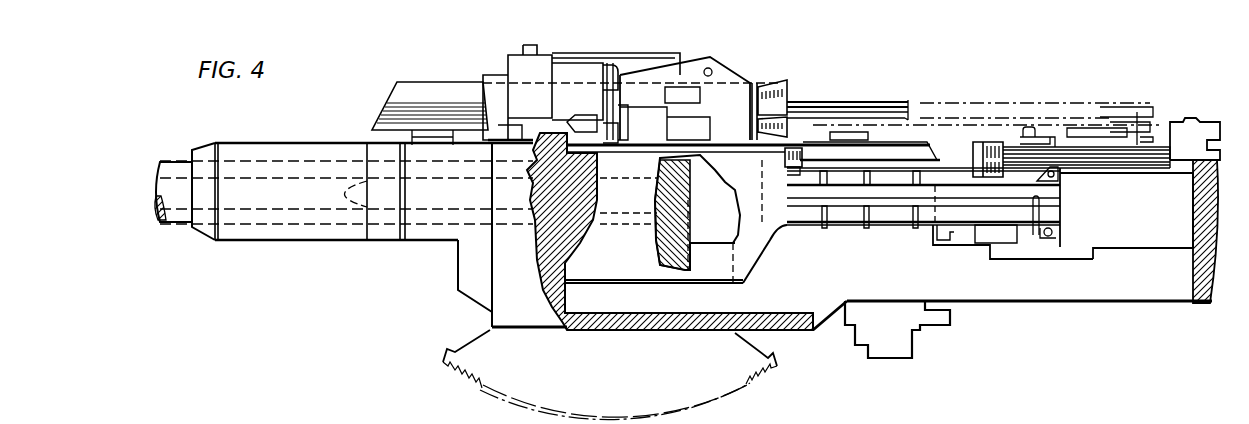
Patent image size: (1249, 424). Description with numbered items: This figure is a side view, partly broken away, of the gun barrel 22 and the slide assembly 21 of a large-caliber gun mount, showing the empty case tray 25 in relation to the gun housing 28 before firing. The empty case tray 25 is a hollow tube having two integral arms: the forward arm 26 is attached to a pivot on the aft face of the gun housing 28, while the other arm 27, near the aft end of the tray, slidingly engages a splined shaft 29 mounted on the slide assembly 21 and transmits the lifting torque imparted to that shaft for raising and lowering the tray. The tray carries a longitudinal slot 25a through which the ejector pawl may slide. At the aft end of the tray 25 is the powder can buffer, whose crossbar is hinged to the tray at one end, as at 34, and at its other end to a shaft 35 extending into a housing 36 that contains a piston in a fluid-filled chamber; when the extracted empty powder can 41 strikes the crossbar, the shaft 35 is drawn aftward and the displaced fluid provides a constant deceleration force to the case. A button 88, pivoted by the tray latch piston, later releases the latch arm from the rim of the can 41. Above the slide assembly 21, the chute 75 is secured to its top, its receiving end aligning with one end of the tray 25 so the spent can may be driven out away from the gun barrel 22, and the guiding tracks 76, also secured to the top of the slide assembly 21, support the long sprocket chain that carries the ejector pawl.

The slide assembly 21 is at (1130, 303).
The gun barrel 22 is at (165, 160).
The empty case tray 25 is at (890, 227).
The slot 25a is at (1016, 190).
The forward arm 26 is at (793, 148).
The arm 27 is at (992, 142).
The gun housing 28 is at (770, 236).
The splined shaft 29 is at (1040, 150).
The hinge 34 is at (1060, 178).
The shaft 35 is at (1050, 239).
The housing 36 is at (996, 259).
The empty powder can 41 is at (637, 212).
The chute 75 is at (420, 82).
The guiding tracks 76 is at (878, 118).
The button 88 is at (1030, 127).